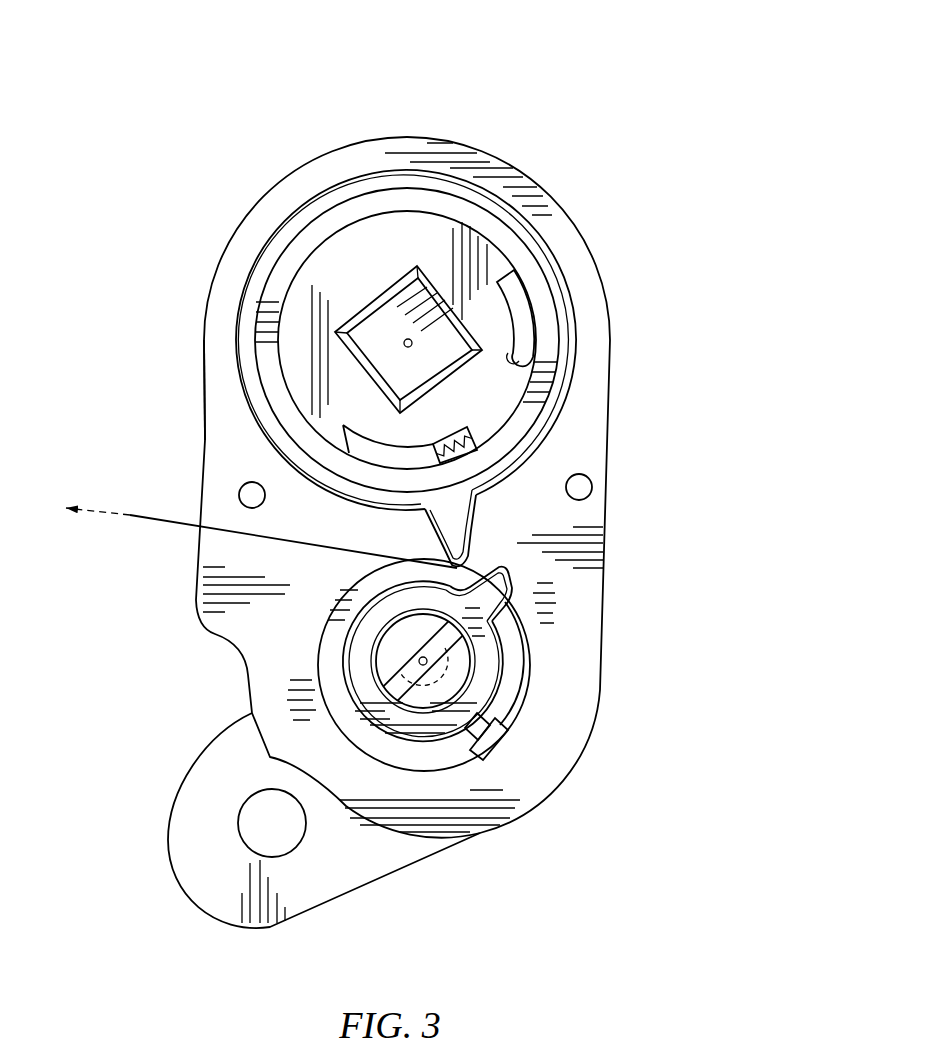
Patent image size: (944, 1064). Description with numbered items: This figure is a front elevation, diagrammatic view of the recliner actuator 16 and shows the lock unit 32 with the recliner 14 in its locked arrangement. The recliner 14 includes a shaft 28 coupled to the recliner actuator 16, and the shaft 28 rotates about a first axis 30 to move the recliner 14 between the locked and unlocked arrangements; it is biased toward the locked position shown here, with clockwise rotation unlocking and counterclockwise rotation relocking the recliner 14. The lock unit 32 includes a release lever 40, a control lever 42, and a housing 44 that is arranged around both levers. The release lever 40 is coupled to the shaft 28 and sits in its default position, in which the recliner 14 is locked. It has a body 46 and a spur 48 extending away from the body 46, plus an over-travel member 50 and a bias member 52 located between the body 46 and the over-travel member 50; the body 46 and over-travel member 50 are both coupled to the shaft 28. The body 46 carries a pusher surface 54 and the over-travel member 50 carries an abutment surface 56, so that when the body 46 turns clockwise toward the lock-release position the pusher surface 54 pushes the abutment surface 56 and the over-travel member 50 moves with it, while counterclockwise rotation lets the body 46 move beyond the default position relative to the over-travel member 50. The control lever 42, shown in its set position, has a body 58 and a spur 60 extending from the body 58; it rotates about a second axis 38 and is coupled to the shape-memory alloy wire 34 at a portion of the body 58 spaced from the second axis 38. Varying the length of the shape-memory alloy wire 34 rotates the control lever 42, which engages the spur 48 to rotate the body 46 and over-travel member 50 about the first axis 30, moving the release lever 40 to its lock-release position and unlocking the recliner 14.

The recliner 14 is at (377, 295).
The recliner actuator 16 is at (160, 108).
The shaft 28 is at (448, 280).
The first axis 30 is at (395, 370).
The lock unit 32 is at (207, 207).
The shape-memory alloy wire 34 is at (215, 530).
The second axis 38 is at (432, 640).
The release lever 40 is at (668, 122).
The control lever 42 is at (477, 764).
The housing 44 is at (198, 312).
The body 46 is at (243, 391).
The spur 48 is at (425, 528).
The over-travel member 50 is at (468, 220).
The bias member 52 is at (478, 452).
The pusher surface 54 is at (518, 358).
The abutment surface 56 is at (512, 356).
The body 58 is at (398, 772).
The spur 60 is at (521, 586).